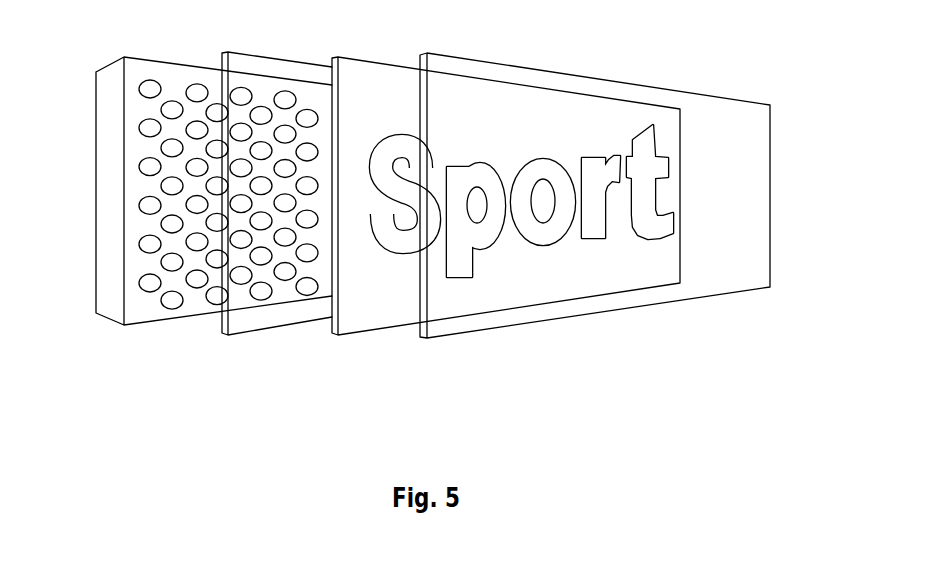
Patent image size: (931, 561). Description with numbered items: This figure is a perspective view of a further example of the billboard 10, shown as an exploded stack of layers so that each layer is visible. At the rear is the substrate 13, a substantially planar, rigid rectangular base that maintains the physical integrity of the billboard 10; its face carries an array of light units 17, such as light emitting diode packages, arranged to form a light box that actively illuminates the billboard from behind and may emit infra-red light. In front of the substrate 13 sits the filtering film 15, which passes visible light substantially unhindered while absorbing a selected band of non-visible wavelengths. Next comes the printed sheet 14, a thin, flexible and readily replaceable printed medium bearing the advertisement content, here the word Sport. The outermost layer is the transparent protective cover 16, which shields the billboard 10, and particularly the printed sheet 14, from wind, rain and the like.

The billboard 10 is at (433, 201).
The substrate 13 is at (214, 198).
The printed sheet 14 is at (357, 327).
The filtering film 15 is at (247, 320).
The transparent protective cover 16 is at (457, 327).
The light units 17 is at (159, 82).